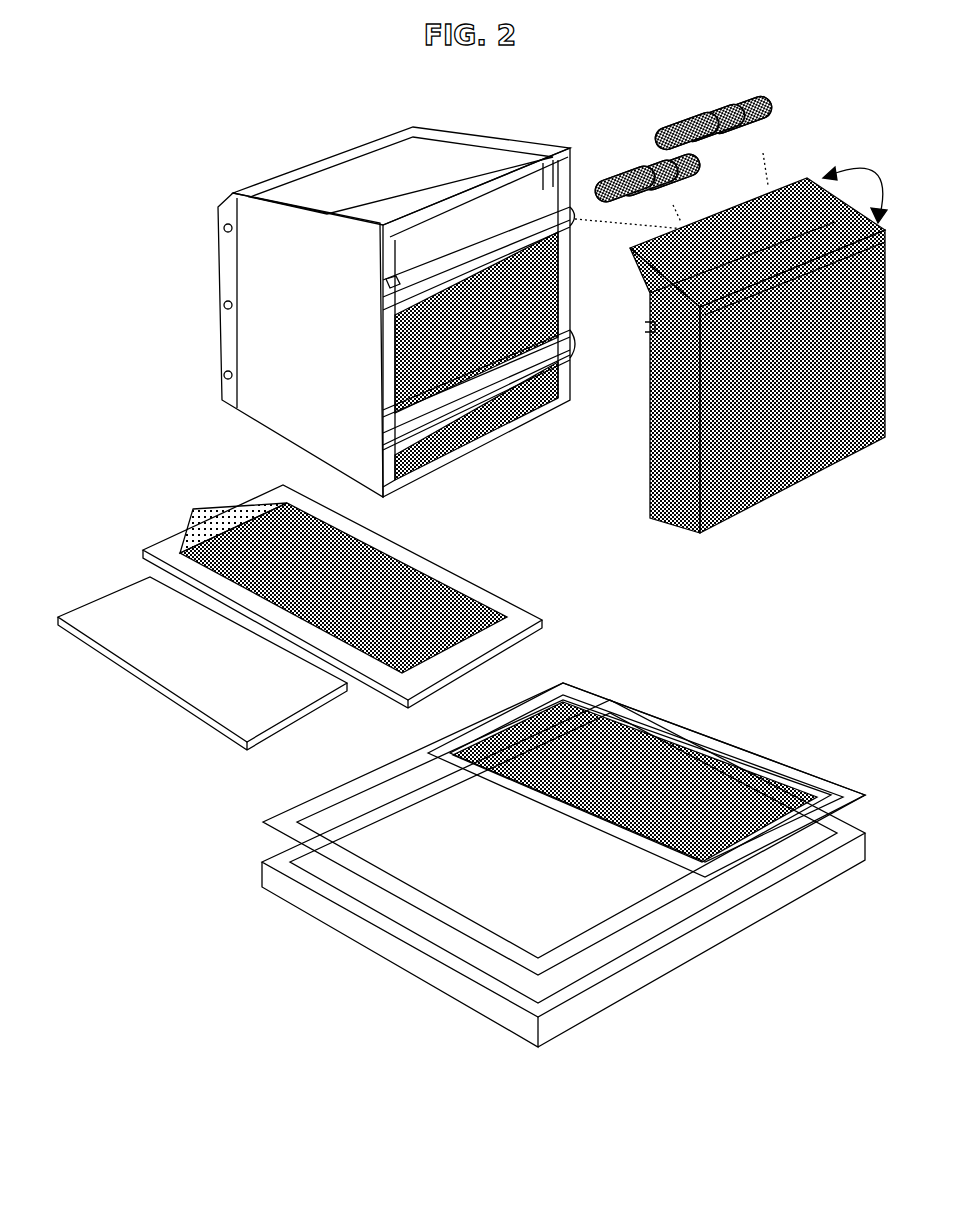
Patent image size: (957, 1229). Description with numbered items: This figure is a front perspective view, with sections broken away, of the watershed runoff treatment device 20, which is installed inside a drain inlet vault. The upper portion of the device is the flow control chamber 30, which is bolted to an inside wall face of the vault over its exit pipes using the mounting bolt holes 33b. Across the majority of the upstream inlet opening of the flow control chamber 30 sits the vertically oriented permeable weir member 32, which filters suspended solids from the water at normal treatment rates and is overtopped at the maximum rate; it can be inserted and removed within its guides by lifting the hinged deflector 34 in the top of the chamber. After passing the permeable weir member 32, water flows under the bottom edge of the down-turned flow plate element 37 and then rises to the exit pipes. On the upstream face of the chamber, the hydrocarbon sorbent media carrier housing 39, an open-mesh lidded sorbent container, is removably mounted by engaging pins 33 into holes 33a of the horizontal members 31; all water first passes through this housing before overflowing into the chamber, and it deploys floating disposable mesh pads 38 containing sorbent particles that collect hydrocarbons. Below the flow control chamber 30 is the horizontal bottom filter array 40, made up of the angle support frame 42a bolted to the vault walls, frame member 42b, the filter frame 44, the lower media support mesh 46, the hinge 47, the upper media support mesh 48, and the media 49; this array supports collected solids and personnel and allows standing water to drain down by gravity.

The watershed runoff treatment device 20 is at (461, 756).
The flow control chamber 30 is at (397, 301).
The horizontal members 31 is at (648, 327).
The permeable weir member 32 is at (503, 289).
The engaging pins 33 is at (648, 327).
The holes 33a is at (570, 222).
The mounting bolt holes 33b is at (222, 305).
The hinged deflector 34 is at (525, 158).
The down-turned flow plate element 37 is at (563, 161).
The mesh pads 38 is at (772, 127).
The hydrocarbon sorbent media carrier housing 39 is at (760, 495).
The bottom filter array 40 is at (514, 865).
The angle support frame 42a is at (305, 902).
The upper frame member 42b is at (265, 822).
The filter frame 44 is at (725, 795).
The lower media support mesh 46 is at (197, 528).
The hinge 47 is at (290, 502).
The upper media support mesh 48 is at (730, 800).
The media 49 is at (213, 690).